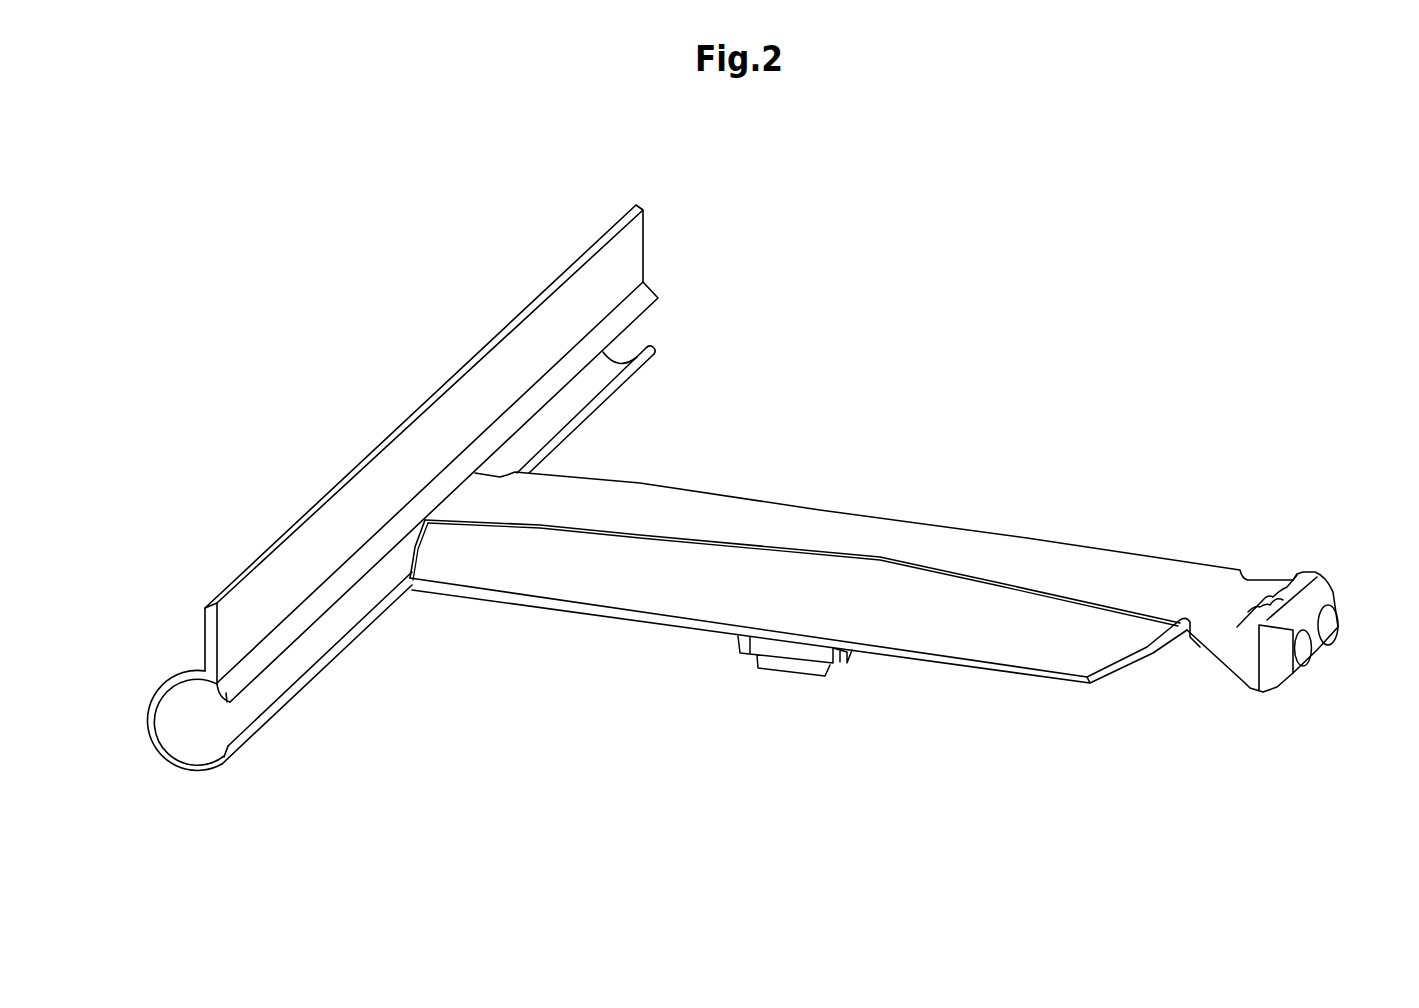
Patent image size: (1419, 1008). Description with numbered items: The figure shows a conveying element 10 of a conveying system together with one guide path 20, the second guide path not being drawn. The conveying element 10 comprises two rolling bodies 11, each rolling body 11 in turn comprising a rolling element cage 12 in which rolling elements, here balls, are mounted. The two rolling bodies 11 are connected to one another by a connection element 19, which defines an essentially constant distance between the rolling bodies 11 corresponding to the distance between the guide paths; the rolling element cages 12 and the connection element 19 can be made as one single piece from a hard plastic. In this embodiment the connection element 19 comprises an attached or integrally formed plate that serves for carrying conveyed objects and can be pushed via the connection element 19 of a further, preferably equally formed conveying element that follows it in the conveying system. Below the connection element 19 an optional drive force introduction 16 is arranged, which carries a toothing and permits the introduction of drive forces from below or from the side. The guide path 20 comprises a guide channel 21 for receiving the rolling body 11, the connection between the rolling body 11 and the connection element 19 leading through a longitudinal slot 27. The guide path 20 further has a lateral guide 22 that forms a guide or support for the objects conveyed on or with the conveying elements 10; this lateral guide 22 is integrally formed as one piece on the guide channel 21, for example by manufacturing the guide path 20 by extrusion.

The conveying element 10 is at (1037, 478).
The rolling body 11 is at (1323, 567).
The rolling element cage 12 is at (1317, 589).
The drive force introduction 16 is at (786, 651).
The connection element 19 is at (836, 529).
The guide path 20 is at (673, 302).
The guide channel 21 is at (193, 745).
The lateral guide 22 is at (209, 622).
The slot 27 is at (672, 335).